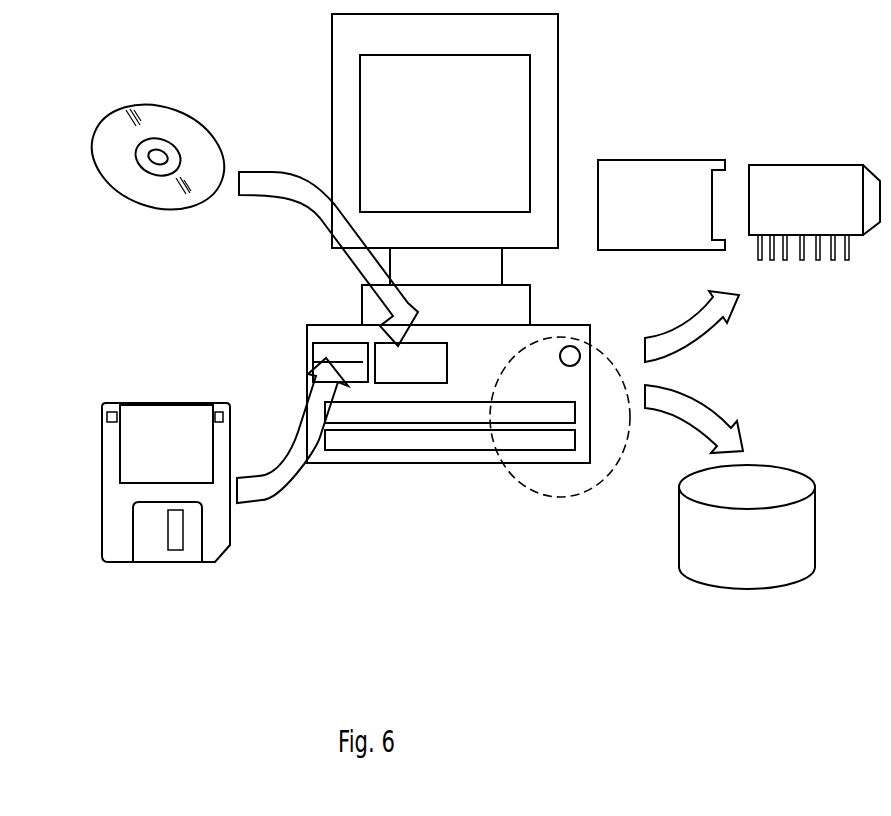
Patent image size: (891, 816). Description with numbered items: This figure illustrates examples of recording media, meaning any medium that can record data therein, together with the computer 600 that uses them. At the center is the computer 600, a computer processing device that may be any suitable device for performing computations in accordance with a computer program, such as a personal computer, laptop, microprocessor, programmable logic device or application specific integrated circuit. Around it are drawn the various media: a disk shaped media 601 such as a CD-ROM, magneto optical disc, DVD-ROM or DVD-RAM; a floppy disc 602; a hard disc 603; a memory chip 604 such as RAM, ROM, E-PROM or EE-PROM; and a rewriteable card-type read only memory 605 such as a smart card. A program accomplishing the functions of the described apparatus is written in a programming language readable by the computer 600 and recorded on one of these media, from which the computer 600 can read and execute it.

The computer 600 is at (332, 45).
The disk shaped media 601 is at (101, 117).
The floppy disc 602 is at (102, 422).
The hard disc 603 is at (815, 545).
The memory chip 604 is at (840, 165).
The rewriteable card-type read only memory 605 is at (690, 160).